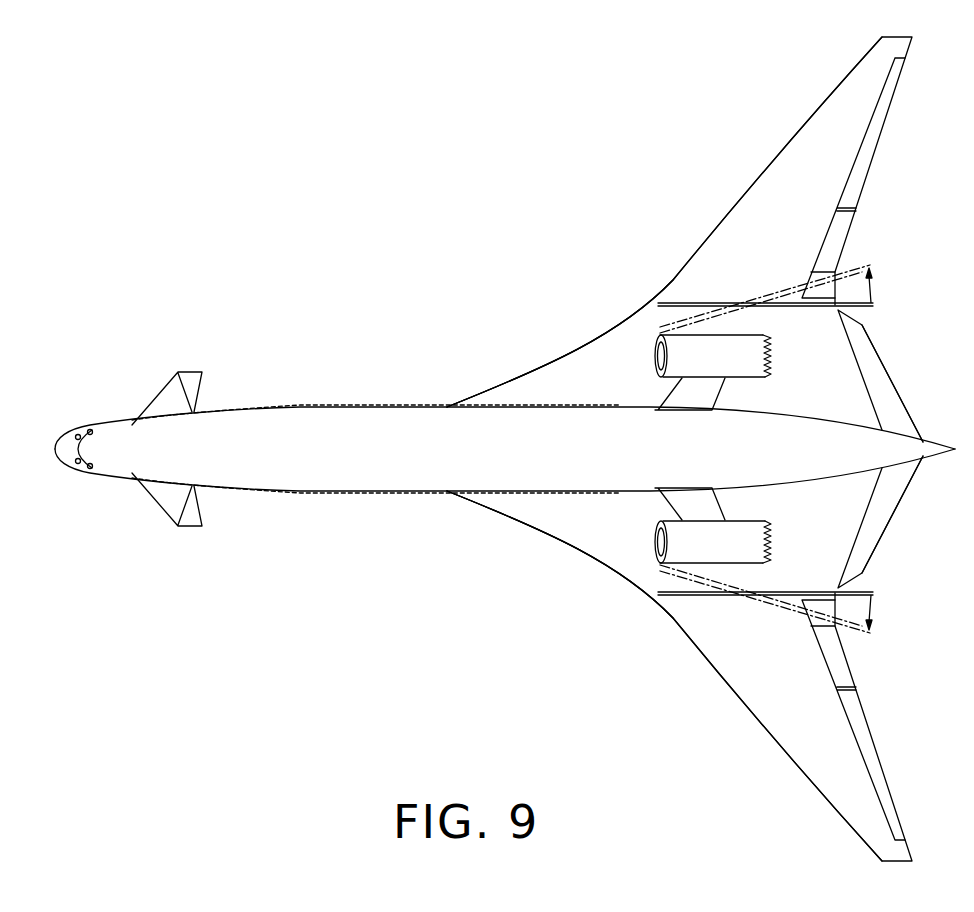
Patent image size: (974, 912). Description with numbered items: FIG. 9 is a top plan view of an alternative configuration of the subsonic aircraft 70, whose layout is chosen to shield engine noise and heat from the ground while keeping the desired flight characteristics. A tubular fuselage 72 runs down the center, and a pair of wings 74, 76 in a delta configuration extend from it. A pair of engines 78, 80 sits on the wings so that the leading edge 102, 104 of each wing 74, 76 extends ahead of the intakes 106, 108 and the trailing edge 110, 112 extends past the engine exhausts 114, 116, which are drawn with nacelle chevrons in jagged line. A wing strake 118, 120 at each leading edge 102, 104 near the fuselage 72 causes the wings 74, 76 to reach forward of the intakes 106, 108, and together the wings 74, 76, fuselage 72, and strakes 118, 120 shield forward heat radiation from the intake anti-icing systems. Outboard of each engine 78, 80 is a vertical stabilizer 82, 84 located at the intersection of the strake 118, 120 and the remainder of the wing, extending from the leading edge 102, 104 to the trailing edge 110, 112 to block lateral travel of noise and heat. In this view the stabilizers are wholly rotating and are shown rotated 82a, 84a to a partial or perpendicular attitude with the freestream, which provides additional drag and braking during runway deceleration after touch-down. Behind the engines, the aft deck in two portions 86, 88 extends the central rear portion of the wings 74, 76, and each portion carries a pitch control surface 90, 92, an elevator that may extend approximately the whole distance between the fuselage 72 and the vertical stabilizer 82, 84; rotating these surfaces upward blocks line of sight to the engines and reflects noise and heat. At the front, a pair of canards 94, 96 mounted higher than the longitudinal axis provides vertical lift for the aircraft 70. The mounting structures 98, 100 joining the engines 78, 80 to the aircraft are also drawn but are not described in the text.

The aircraft 70 is at (408, 300).
The tubular fuselage 72 is at (350, 460).
The wing 74 is at (692, 676).
The wing 76 is at (692, 222).
The engine 78 is at (687, 518).
The engine 80 is at (687, 380).
The vertical stabilizer 82 is at (740, 602).
The rotated vertical stabilizer 82a is at (717, 585).
The vertical stabilizer 84 is at (748, 295).
The rotated vertical stabilizer 84a is at (717, 313).
The aft deck portion 86 is at (897, 522).
The aft deck portion 88 is at (897, 376).
The pitch control surface 90 is at (875, 532).
The pitch control surface 92 is at (875, 367).
The canard 94 is at (170, 498).
The canard 96 is at (170, 400).
The left engine pylon 98 is at (668, 504).
The right engine pylon 100 is at (668, 394).
The leading edge 102 is at (743, 701).
The leading edge 104 is at (743, 197).
The intake 106 is at (652, 536).
The intake 108 is at (652, 362).
The trailing edge 110 is at (850, 676).
The trailing edge 112 is at (850, 222).
The engine exhaust 114 is at (773, 543).
The engine exhaust 116 is at (773, 355).
The wing strake 118 is at (582, 523).
The wing strake 120 is at (582, 398).